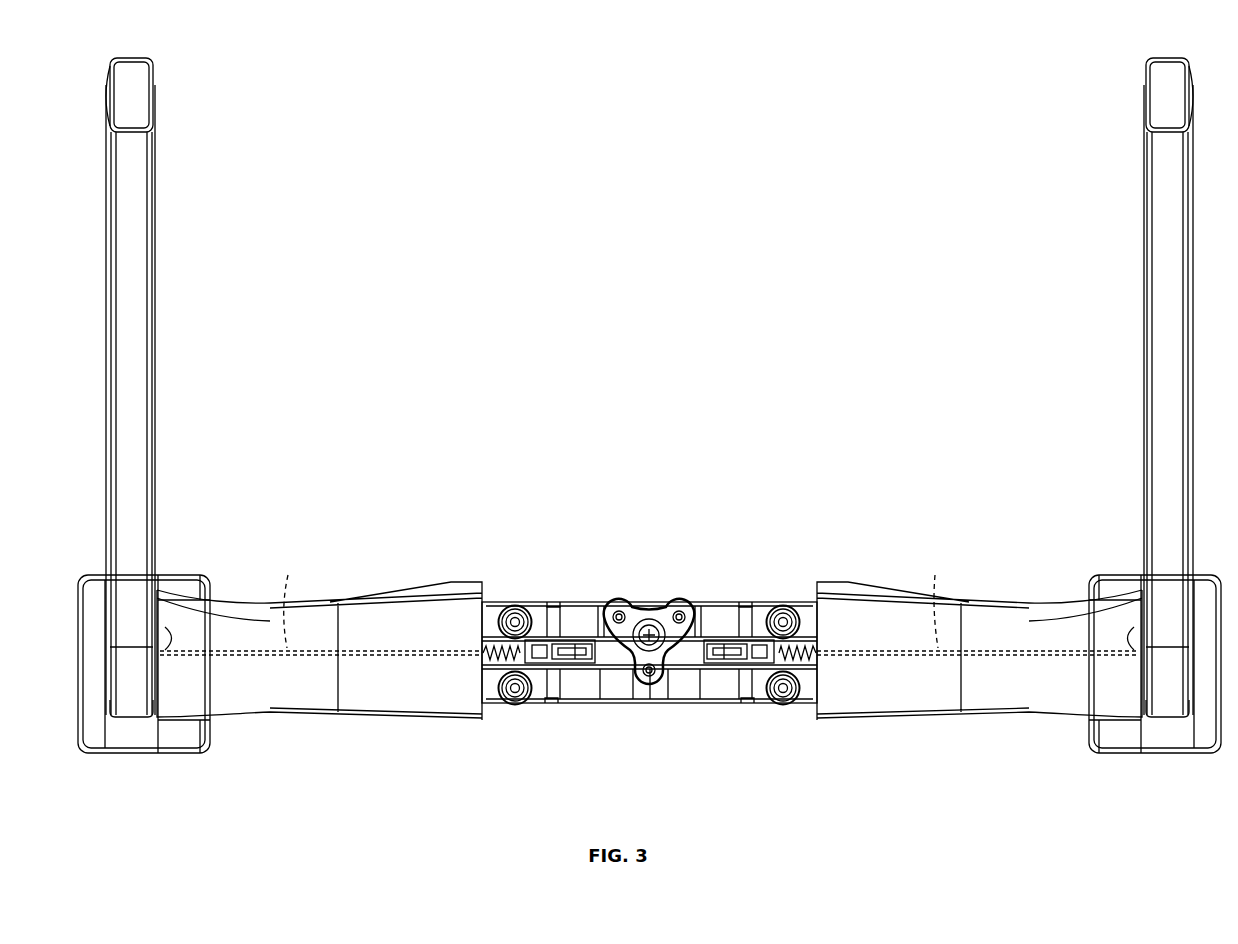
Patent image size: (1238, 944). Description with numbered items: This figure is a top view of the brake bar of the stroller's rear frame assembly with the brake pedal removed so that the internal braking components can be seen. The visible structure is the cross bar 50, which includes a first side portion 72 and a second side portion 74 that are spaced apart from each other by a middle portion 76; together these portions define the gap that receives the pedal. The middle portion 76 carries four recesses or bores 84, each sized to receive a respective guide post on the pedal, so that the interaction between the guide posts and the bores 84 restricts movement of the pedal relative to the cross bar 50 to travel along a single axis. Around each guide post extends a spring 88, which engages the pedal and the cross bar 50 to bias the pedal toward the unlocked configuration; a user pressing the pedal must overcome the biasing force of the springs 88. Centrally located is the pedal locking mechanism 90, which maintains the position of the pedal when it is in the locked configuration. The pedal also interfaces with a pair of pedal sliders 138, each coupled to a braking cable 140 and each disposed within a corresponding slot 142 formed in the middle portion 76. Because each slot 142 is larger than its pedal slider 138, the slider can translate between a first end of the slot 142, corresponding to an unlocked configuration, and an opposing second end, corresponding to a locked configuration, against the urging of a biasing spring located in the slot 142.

The cross bar 50 is at (319, 677).
The first side portion 72 is at (392, 691).
The second side portion 74 is at (869, 691).
The middle portion 76 is at (707, 703).
The bore 84 is at (512, 612).
The spring 88 is at (528, 607).
The pedal locking mechanism 90 is at (647, 684).
The pedal slider 138 is at (549, 668).
The braking cable 140 is at (610, 600).
The slot 142 is at (493, 638).